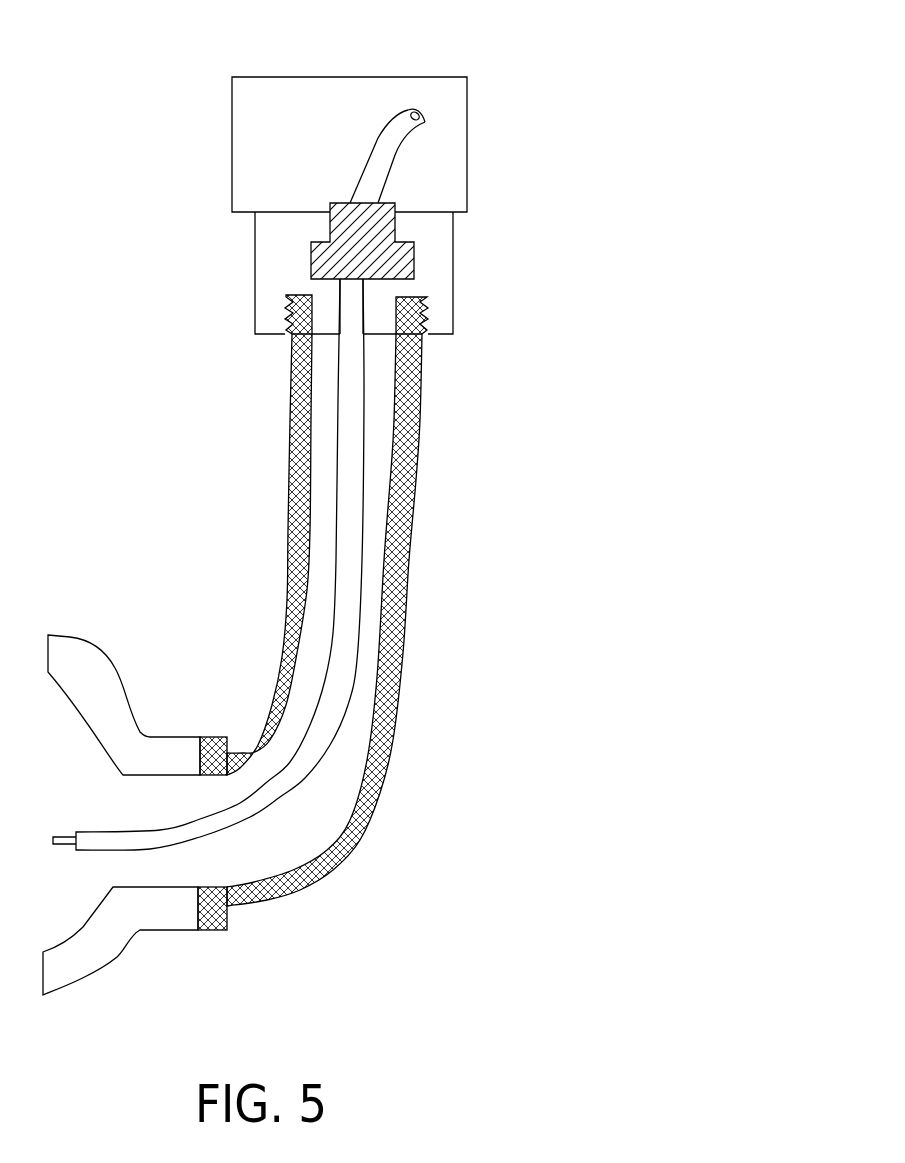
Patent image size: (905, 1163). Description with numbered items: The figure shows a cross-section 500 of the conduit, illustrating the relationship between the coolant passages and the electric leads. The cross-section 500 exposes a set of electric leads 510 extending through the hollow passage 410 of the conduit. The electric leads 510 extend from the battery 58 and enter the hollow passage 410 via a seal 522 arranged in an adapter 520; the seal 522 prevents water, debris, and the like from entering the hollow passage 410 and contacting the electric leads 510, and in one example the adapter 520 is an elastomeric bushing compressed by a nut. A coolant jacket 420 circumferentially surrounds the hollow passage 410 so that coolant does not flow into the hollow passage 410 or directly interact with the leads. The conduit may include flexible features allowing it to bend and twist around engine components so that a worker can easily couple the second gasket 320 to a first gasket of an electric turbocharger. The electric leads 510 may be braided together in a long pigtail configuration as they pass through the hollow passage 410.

The cross-section 500 is at (522, 26).
The battery 58 is at (268, 76).
The set of electric leads 510 is at (380, 133).
The adapter 520 is at (453, 245).
The seal 522 is at (310, 253).
The coolant jacket 420 is at (300, 472).
The hollow passage 410 is at (380, 433).
The second gasket 320 is at (110, 662).